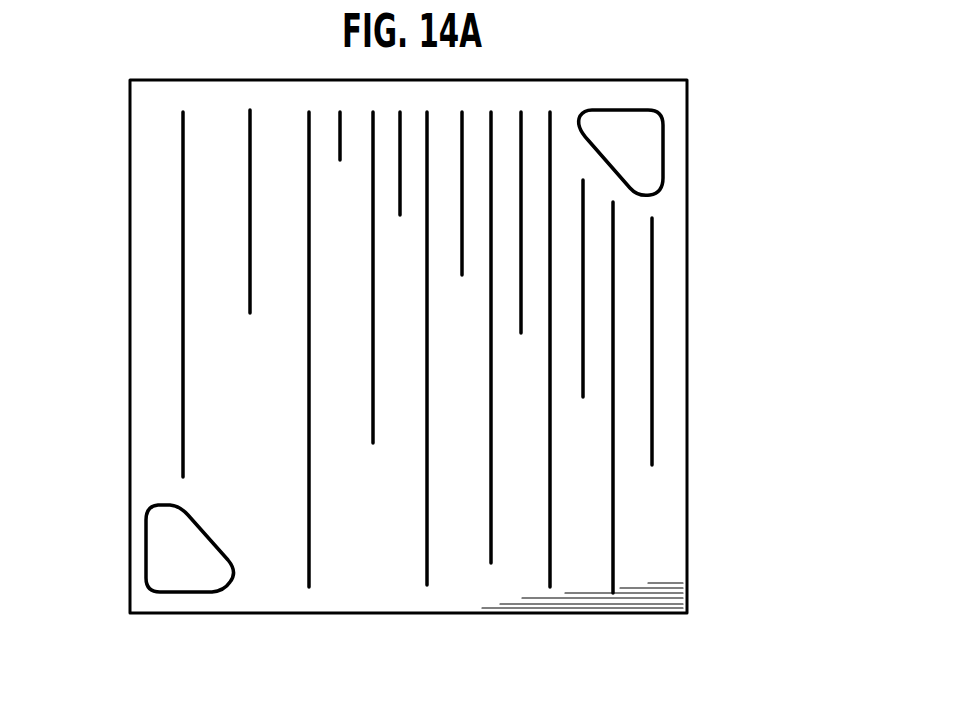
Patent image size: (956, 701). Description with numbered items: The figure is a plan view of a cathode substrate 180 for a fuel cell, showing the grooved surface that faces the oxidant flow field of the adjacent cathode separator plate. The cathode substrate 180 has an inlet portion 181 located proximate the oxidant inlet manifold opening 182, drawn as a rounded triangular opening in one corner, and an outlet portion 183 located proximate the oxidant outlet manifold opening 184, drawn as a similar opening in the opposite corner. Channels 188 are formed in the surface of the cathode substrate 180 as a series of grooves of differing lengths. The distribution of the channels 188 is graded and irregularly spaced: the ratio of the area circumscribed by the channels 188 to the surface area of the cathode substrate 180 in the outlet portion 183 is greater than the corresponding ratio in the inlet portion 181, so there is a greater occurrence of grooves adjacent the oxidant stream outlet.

The cathode substrate 180 is at (692, 70).
The inlet portion 181 is at (256, 453).
The oxidant inlet manifold opening 182 is at (163, 554).
The outlet portion 183 is at (566, 237).
The oxidant outlet manifold opening 184 is at (652, 157).
The channels 188 is at (309, 473).